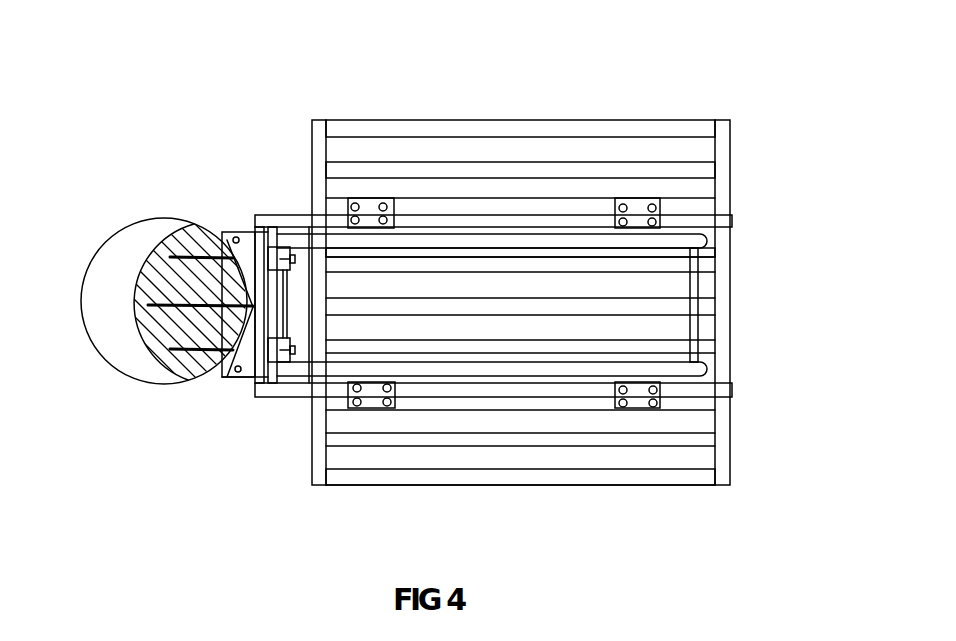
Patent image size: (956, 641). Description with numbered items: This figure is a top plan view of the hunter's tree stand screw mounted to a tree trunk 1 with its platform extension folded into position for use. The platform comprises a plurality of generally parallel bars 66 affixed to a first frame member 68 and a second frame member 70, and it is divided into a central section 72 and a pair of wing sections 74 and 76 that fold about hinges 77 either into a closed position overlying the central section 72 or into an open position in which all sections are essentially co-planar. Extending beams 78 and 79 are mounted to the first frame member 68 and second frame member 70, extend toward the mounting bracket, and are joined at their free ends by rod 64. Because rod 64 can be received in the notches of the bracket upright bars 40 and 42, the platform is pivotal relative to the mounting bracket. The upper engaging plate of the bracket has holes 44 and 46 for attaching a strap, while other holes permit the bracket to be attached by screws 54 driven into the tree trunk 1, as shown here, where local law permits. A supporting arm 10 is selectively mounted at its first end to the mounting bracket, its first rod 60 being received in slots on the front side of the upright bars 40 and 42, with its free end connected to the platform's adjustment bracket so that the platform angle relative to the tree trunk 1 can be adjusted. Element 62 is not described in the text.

The tree trunk 1 is at (113, 240).
The supporting arm 10 is at (705, 241).
The bracket upright bar 40 is at (255, 387).
The bracket upright bar 42 is at (232, 231).
The hole 44 is at (243, 373).
The hole 46 is at (238, 236).
The screws 54 is at (148, 306).
The first rod 60 is at (290, 323).
The support post 62 is at (703, 291).
The rod 64 is at (262, 213).
The generally parallel bars 66 is at (505, 352).
The first frame member 68 is at (317, 120).
The second frame member 70 is at (733, 127).
The central section 72 is at (733, 255).
The wing section 74 is at (733, 168).
The wing section 76 is at (733, 462).
The hinges 77 is at (370, 198).
The extending beam 78 is at (733, 218).
The extending beam 79 is at (733, 386).